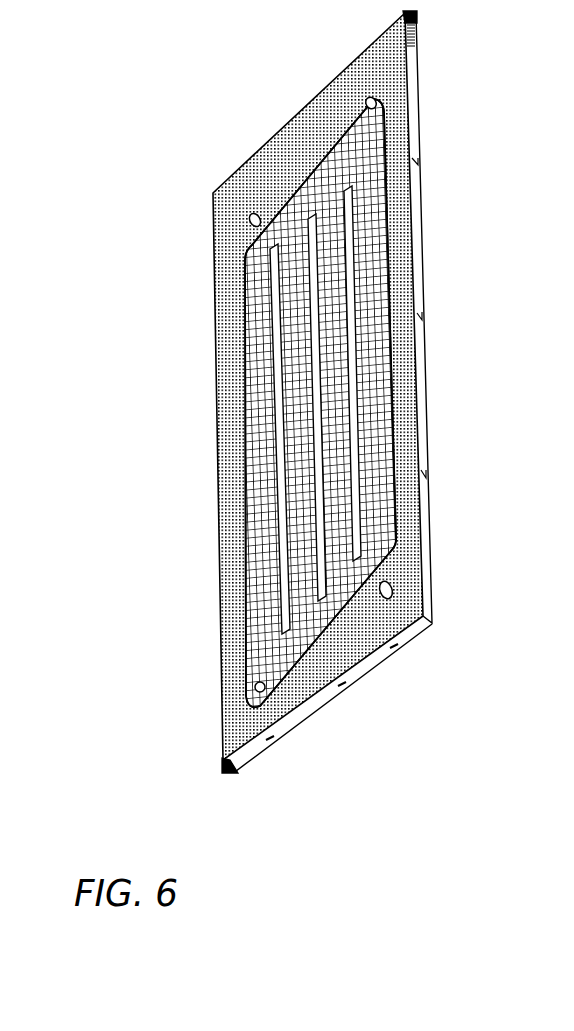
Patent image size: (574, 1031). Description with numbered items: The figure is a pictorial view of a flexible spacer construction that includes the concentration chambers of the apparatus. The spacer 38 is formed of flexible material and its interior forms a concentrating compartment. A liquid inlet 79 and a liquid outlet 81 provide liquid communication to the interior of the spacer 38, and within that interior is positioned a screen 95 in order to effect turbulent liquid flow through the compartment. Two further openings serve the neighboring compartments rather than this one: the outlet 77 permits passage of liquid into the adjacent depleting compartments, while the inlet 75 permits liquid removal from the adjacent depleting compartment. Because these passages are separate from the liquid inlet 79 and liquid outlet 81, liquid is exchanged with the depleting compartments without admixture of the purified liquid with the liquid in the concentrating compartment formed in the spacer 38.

The spacer 38 is at (321, 103).
The screen 95 is at (370, 358).
The inlet 75 is at (243, 215).
The liquid inlet 79 is at (367, 92).
The outlet 77 is at (385, 582).
The liquid outlet 81 is at (247, 683).